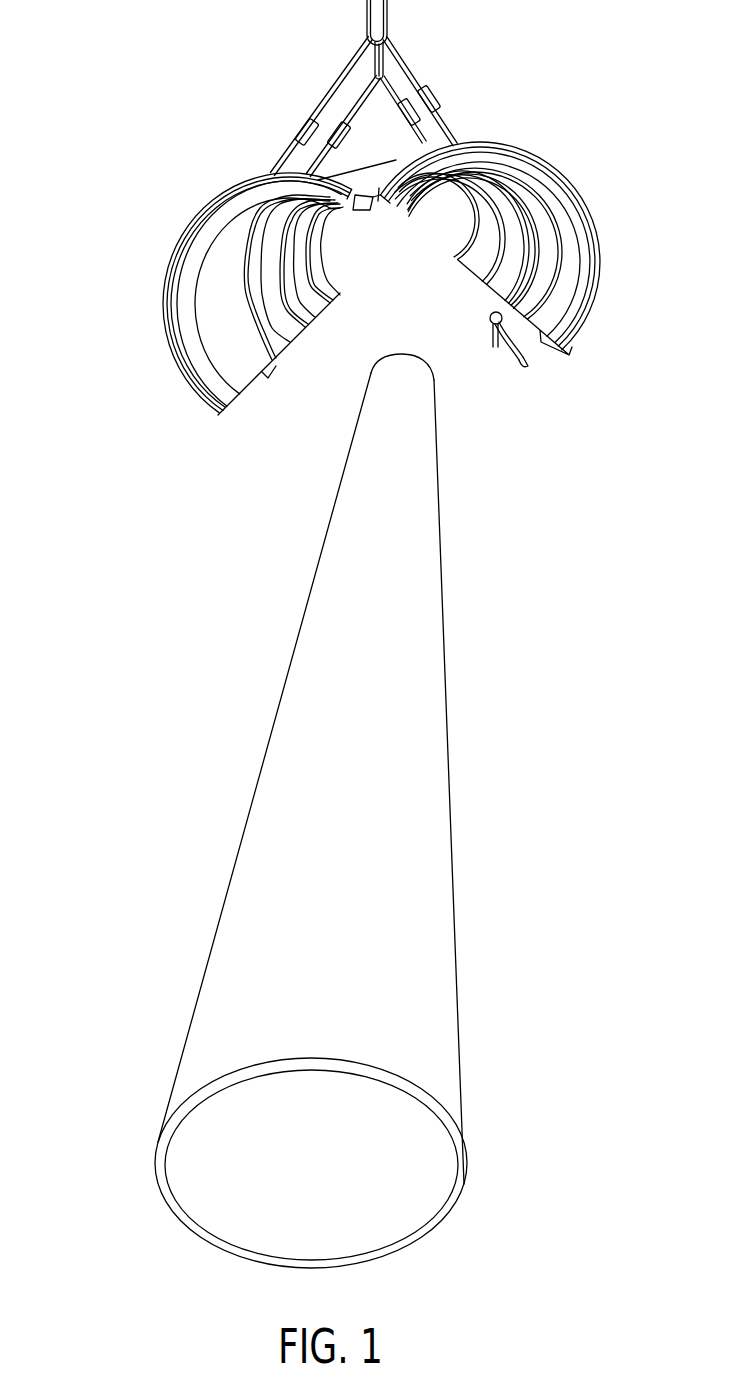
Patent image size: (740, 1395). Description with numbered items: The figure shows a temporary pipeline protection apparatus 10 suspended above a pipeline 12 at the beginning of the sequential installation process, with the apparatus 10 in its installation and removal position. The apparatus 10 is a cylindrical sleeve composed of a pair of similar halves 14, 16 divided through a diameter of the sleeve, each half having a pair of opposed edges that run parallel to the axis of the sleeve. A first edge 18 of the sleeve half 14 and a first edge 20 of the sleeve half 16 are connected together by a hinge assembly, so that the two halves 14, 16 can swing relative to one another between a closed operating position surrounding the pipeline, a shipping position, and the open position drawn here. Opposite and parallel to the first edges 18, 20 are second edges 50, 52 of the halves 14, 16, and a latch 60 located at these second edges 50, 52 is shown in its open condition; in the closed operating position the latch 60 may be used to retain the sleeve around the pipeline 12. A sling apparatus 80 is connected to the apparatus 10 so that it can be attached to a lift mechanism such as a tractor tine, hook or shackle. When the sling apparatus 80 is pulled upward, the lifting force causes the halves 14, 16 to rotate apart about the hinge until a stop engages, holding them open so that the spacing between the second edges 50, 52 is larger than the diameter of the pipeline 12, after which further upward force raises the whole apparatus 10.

The temporary pipeline protection apparatus 10 is at (95, 68).
The pipeline 12 is at (223, 1225).
The sleeve half 14 is at (212, 322).
The sleeve half 16 is at (550, 288).
The first edge 18 is at (355, 205).
The first edge 20 is at (384, 203).
The second edge 50 is at (263, 367).
The second edge 52 is at (483, 270).
The latch 60 is at (523, 373).
The sling apparatus 80 is at (415, 68).